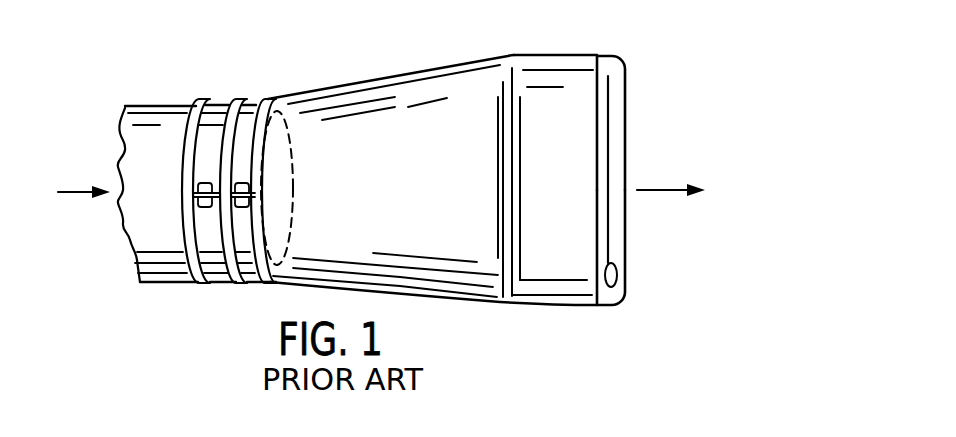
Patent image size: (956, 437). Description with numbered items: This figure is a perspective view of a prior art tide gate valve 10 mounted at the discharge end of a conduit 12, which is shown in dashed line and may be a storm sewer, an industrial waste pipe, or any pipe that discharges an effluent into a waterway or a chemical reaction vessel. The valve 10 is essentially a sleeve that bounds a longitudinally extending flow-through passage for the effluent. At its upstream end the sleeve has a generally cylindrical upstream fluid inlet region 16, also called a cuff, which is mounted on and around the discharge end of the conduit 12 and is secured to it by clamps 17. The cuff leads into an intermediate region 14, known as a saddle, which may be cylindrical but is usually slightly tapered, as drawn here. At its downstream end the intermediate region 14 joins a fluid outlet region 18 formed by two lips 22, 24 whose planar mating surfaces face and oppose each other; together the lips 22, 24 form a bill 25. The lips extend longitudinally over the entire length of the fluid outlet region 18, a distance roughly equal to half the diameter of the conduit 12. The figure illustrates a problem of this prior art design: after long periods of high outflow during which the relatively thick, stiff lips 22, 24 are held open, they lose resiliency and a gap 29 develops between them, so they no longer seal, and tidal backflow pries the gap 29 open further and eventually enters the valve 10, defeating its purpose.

The tide gate valve 10 is at (434, 154).
The conduit 12 is at (160, 106).
The intermediate region 14 is at (375, 82).
The upstream fluid inlet region 16 is at (200, 99).
The clamps 17 is at (221, 100).
The fluid outlet region 18 is at (573, 54).
The lip 22 is at (602, 152).
The lip 24 is at (618, 95).
The bill 25 is at (627, 232).
The gap 29 is at (613, 278).